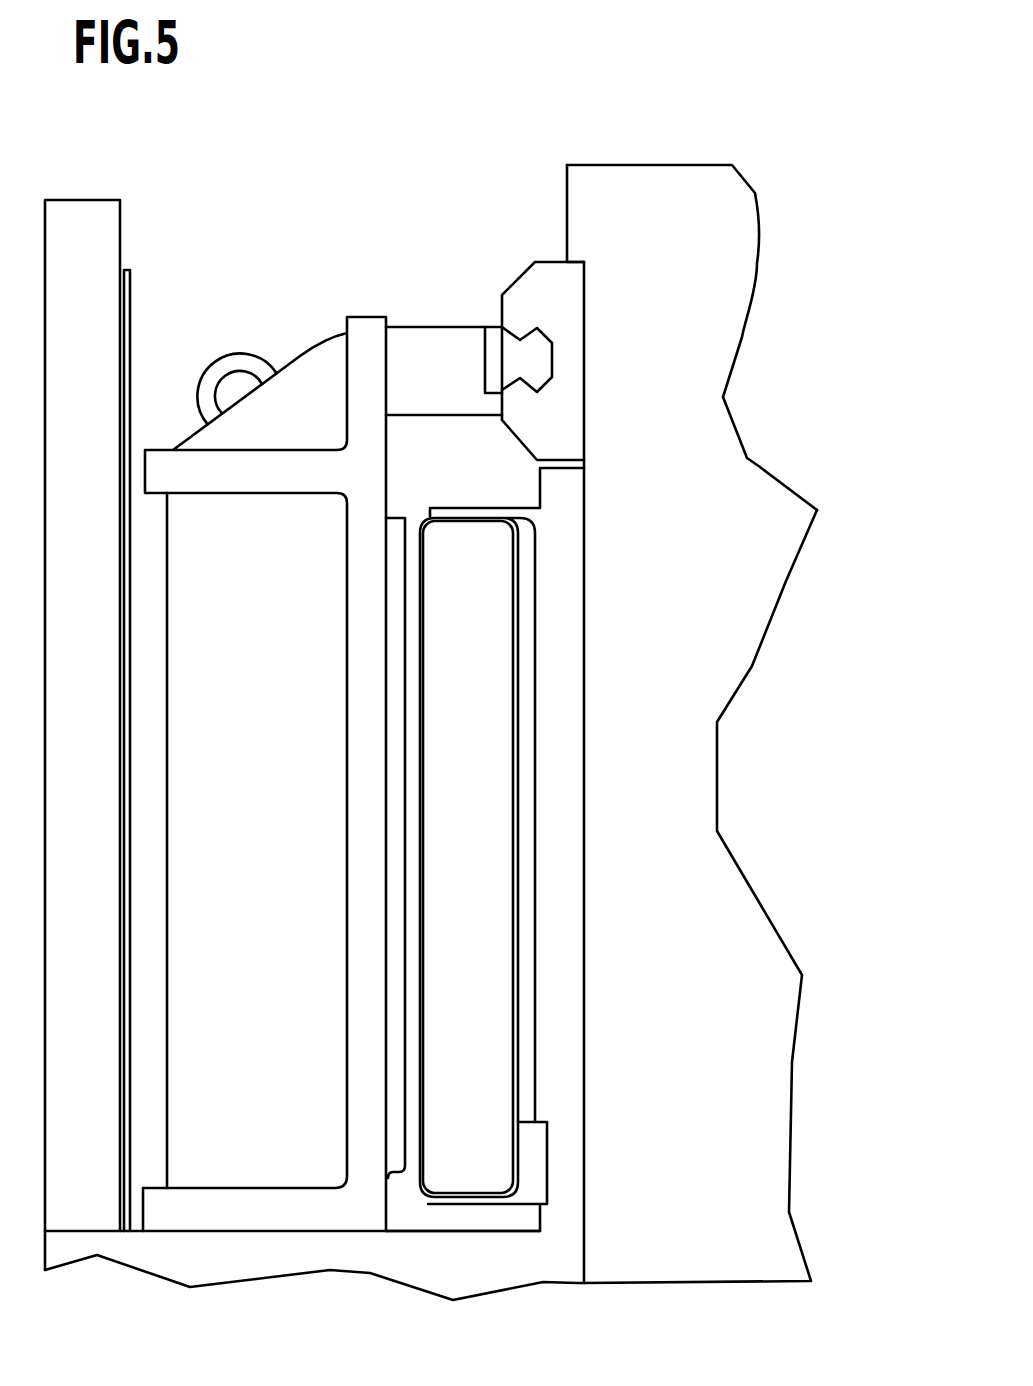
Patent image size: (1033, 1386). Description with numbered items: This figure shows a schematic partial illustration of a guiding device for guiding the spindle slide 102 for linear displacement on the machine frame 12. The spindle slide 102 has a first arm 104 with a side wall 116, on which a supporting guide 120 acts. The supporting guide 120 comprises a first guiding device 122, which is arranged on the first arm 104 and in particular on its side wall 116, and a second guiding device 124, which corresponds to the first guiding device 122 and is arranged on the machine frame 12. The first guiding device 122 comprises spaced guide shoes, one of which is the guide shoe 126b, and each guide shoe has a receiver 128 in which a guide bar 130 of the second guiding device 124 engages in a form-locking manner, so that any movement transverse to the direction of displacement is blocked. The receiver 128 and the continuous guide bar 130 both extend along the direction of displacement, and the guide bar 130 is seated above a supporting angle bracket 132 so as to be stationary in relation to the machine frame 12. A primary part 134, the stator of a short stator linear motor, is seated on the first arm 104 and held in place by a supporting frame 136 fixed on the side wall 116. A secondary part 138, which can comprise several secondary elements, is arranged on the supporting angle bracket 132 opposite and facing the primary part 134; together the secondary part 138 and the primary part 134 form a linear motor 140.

The machine frame 12 is at (205, 1268).
The spindle slide 102 is at (746, 107).
The first arm 104 is at (676, 999).
The side wall 116 is at (567, 182).
The supporting guide 120 is at (446, 265).
The first guiding device 122 is at (533, 287).
The second guiding device 124 is at (423, 345).
The guide shoe 126b is at (549, 424).
The receiver 128 is at (546, 383).
The guide bar 130 is at (538, 355).
The supporting angle bracket 132 is at (262, 473).
The primary part 134 is at (488, 812).
The supporting frame 136 is at (565, 583).
The secondary part 138 is at (258, 828).
The linear motor 140 is at (410, 1238).